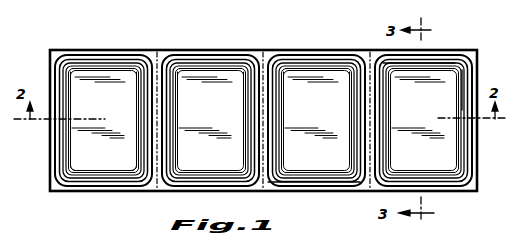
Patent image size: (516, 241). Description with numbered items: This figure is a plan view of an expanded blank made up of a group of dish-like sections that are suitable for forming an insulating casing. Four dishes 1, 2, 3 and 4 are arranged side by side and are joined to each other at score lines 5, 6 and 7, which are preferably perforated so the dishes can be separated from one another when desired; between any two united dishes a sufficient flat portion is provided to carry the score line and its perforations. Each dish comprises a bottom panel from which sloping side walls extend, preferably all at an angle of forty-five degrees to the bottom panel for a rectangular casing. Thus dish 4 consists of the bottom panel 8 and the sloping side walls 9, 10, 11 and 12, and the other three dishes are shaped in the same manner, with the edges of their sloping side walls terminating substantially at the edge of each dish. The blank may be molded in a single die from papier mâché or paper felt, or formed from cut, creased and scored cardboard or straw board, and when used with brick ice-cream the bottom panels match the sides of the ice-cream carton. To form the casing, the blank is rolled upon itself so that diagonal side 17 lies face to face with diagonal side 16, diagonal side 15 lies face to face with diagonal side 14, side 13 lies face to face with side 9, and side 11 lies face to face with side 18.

The dish 1 is at (98, 50).
The dish 2 is at (202, 50).
The dish 3 is at (303, 50).
The dish 4 is at (433, 50).
The score line 5 is at (156, 50).
The score line 6 is at (260, 50).
The score line 7 is at (370, 50).
The bottom panel 8 is at (115, 162).
The sloping side wall 9 is at (377, 108).
The sloping side wall 10 is at (444, 62).
The sloping side wall 11 is at (461, 95).
The sloping side wall 12 is at (300, 180).
The side 13 is at (350, 83).
The diagonal side 14 is at (307, 87).
The diagonal side 15 is at (245, 87).
The diagonal side 16 is at (167, 102).
The diagonal side 17 is at (140, 87).
The side 18 is at (58, 102).